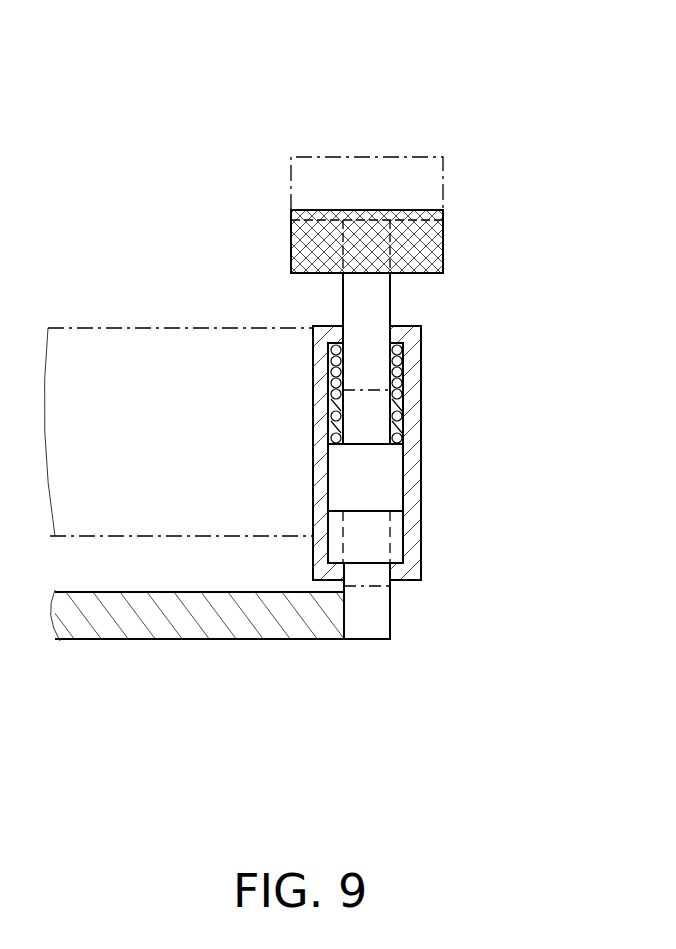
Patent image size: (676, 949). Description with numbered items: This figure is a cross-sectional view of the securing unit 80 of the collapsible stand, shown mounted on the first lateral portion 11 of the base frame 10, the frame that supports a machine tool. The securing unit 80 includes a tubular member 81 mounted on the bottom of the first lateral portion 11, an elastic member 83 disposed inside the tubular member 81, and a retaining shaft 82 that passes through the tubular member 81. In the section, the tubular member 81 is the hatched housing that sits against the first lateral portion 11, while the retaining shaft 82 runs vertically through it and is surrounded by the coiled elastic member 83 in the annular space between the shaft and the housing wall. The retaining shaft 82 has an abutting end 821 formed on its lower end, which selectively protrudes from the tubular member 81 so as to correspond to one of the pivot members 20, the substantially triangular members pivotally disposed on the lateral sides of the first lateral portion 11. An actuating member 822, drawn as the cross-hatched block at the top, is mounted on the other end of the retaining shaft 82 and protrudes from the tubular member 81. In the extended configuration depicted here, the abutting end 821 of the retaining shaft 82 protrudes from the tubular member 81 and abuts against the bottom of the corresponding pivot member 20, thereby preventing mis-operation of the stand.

The base frame 10 is at (98, 330).
The first lateral portion 11 is at (290, 372).
The pivot member 20 is at (112, 652).
The securing unit 80 is at (442, 309).
The tubular member 81 is at (413, 373).
The retaining shaft 82 is at (392, 482).
The elastic member 83 is at (400, 425).
The abutting end 821 is at (367, 578).
The actuating member 822 is at (370, 155).